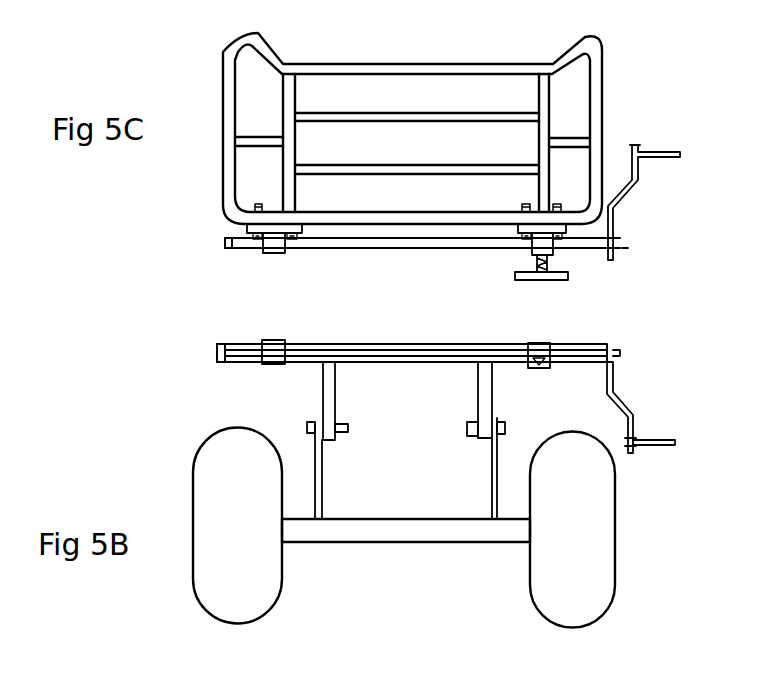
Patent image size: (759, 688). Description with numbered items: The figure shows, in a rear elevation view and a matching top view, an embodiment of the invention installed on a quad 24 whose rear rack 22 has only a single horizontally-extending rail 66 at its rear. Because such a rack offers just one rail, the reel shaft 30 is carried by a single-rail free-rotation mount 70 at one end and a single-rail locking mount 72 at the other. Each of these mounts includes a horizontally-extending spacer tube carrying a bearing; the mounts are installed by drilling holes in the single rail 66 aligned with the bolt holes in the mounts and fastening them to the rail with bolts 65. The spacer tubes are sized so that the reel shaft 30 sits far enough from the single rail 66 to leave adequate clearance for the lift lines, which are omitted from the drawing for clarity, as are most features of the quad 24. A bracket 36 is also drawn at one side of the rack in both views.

In FIG. 5C, the rear rack 22 is at (597, 120).
In FIG. 5B, the quad 24 is at (175, 463).
In FIG. 5C, the reel shaft 30 is at (422, 246).
In FIG. 5B, the reel shaft 30 is at (412, 355).
In FIG. 5C, the bracket 36 is at (637, 191).
In FIG. 5B, the bracket 36 is at (632, 412).
In FIG. 5C, the bolts 65 is at (562, 244).
In FIG. 5C, the single rail 66 is at (240, 218).
In FIG. 5B, the single rail 66 is at (218, 348).
In FIG. 5C, the single-rail free-rotation mount 70 is at (276, 253).
In FIG. 5B, the single-rail free-rotation mount 70 is at (272, 345).
In FIG. 5C, the single-rail locking mount 72 is at (546, 281).
In FIG. 5B, the single-rail locking mount 72 is at (541, 344).